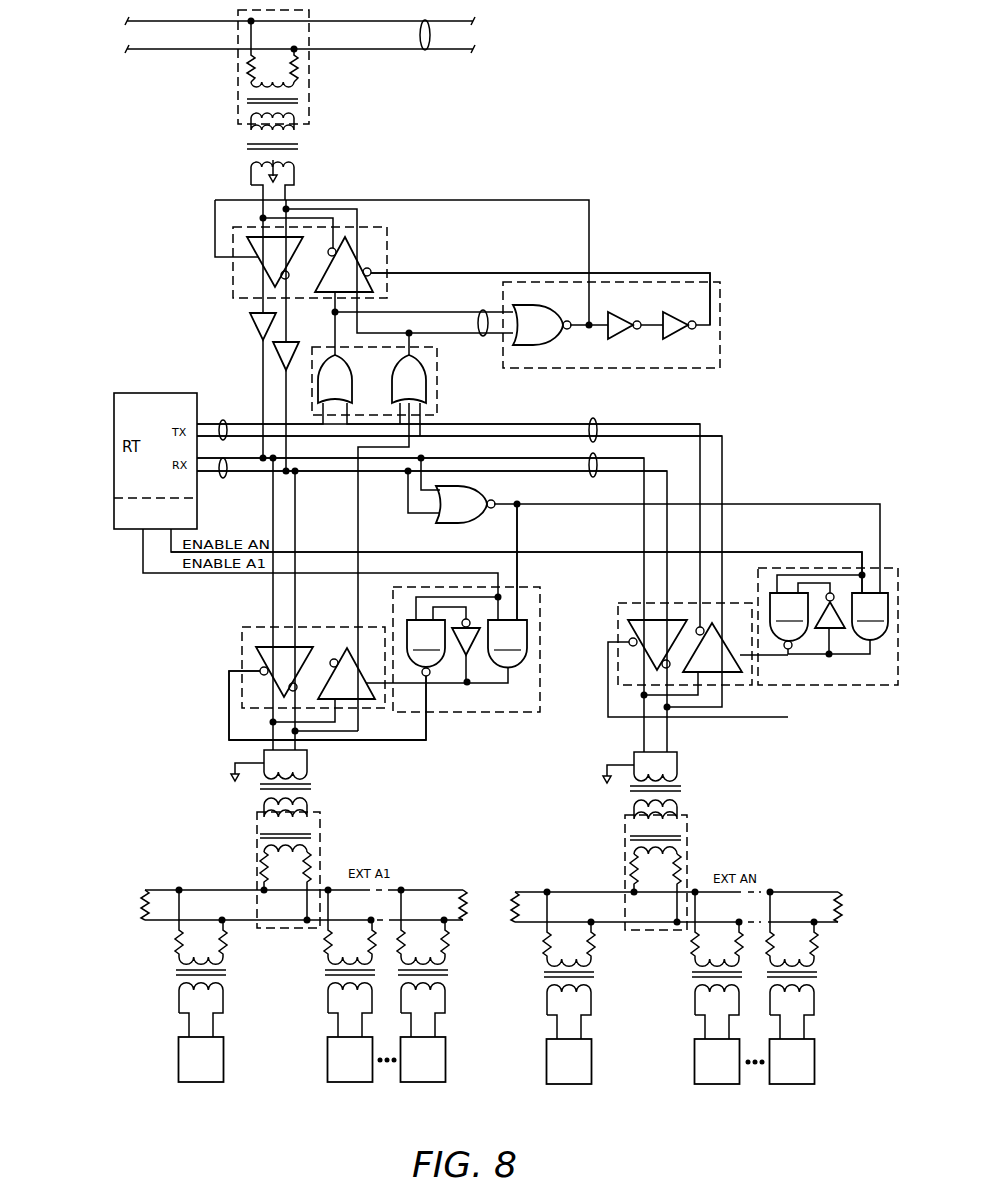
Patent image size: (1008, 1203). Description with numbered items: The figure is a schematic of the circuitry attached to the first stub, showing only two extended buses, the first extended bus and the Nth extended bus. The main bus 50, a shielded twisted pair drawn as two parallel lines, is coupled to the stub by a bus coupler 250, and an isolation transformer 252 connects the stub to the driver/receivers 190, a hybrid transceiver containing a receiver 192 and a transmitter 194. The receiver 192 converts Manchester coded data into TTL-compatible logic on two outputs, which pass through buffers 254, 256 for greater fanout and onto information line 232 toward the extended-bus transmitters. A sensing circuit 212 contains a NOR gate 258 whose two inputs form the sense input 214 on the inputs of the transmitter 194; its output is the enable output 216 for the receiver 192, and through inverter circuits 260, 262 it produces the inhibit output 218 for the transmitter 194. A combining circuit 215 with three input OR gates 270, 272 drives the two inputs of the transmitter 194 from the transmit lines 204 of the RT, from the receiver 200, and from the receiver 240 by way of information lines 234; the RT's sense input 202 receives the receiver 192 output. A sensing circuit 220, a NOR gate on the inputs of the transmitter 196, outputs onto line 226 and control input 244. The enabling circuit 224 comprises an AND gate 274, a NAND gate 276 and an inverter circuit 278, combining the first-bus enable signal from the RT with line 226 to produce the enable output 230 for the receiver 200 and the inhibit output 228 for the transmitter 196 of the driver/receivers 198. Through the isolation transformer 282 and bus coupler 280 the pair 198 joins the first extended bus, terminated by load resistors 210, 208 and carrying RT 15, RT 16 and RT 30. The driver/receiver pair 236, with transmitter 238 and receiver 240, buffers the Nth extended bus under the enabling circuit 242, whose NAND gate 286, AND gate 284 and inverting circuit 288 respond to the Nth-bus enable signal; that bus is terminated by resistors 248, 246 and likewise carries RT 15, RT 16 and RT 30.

The main bus 50 is at (428, 50).
The bus coupler 250 is at (236, 99).
The isolation transformer 252 is at (302, 154).
The enable output 216 is at (471, 202).
The driver/receivers 190 is at (388, 227).
The receiver 192 is at (253, 262).
The transmitter 194 is at (362, 258).
The buffer 254 is at (254, 323).
The buffer 256 is at (282, 352).
The sense input 214 is at (481, 310).
The inhibit output 218 is at (620, 274).
The sensing circuit 212 is at (628, 369).
The NOR gate 258 is at (538, 345).
The inverter circuit 260 is at (619, 313).
The inverter circuit 262 is at (678, 340).
The combining circuit 215 is at (437, 407).
The three input OR gate 270 is at (398, 365).
The three input OR gate 272 is at (346, 392).
The transmit lines 204 is at (222, 420).
The sense input 202 is at (226, 480).
The sensing circuit 220 is at (489, 494).
The second input 226 is at (518, 539).
The information lines 234 is at (596, 425).
The information line 232 is at (596, 461).
The control input 244 is at (727, 552).
The enabling circuit 224 is at (531, 588).
The AND gate 274 is at (507, 644).
The NAND gate 276 is at (426, 648).
The inverter circuit 278 is at (478, 662).
The enable output 230 is at (432, 684).
The driver/receivers 198 is at (242, 627).
The transmitter 196 is at (256, 651).
The receiver 200 is at (361, 700).
The inhibit output 228 is at (361, 743).
The isolation transformer 282 is at (312, 787).
The bus coupler 280 is at (321, 826).
The load resistor 210 is at (143, 897).
The load resistor 208 is at (464, 898).
The driver/receiver pair 236 is at (620, 603).
The transmitter 238 is at (630, 627).
The receiver 240 is at (733, 680).
The enabling circuit 242 is at (845, 686).
The NAND gate 286 is at (789, 621).
The AND gate 284 is at (870, 616).
The inverting circuit 288 is at (843, 650).
The termination resistor 248 is at (512, 926).
The termination resistor 246 is at (842, 926).
The RT 15 is at (385, 997).
The RT 16 is at (533, 997).
The RT 30 is at (607, 997).